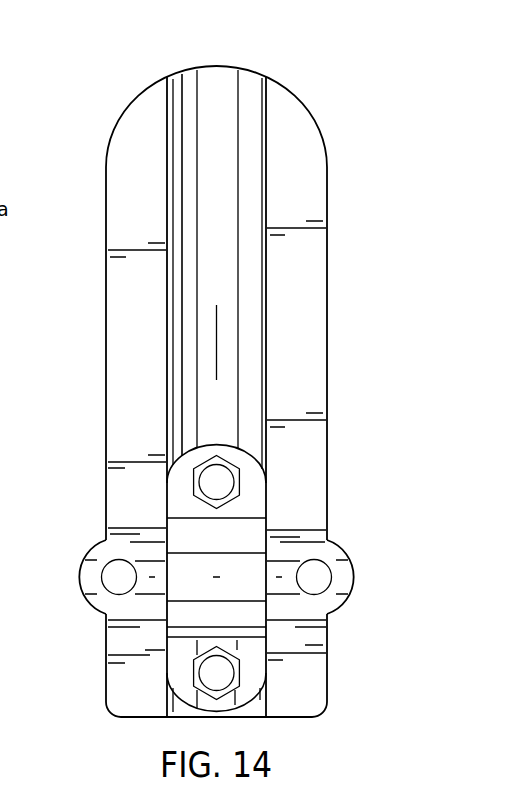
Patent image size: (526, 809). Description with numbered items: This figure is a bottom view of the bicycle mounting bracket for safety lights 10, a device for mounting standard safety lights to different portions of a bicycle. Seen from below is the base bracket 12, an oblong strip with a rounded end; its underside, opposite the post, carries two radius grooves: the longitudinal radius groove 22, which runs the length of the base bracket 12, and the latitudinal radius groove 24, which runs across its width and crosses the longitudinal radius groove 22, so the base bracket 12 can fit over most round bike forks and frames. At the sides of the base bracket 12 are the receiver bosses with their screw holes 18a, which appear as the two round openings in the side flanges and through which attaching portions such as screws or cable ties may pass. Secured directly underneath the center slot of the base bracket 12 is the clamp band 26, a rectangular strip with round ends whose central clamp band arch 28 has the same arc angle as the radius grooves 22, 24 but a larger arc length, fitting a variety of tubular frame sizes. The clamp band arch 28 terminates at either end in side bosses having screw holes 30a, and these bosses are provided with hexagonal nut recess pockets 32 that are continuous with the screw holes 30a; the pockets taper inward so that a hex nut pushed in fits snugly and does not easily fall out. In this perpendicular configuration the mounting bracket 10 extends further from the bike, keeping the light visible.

The bicycle mounting bracket for safety lights 10 is at (358, 122).
The base bracket 12 is at (310, 338).
The screw holes 18a is at (100, 578).
The longitudinal radius groove 22 is at (216, 80).
The latitudinal radius groove 24 is at (302, 538).
The clamp band 26 is at (248, 624).
The clamp band arch 28 is at (237, 587).
The screw holes 30a is at (215, 482).
The nut recess pockets 32 is at (239, 482).